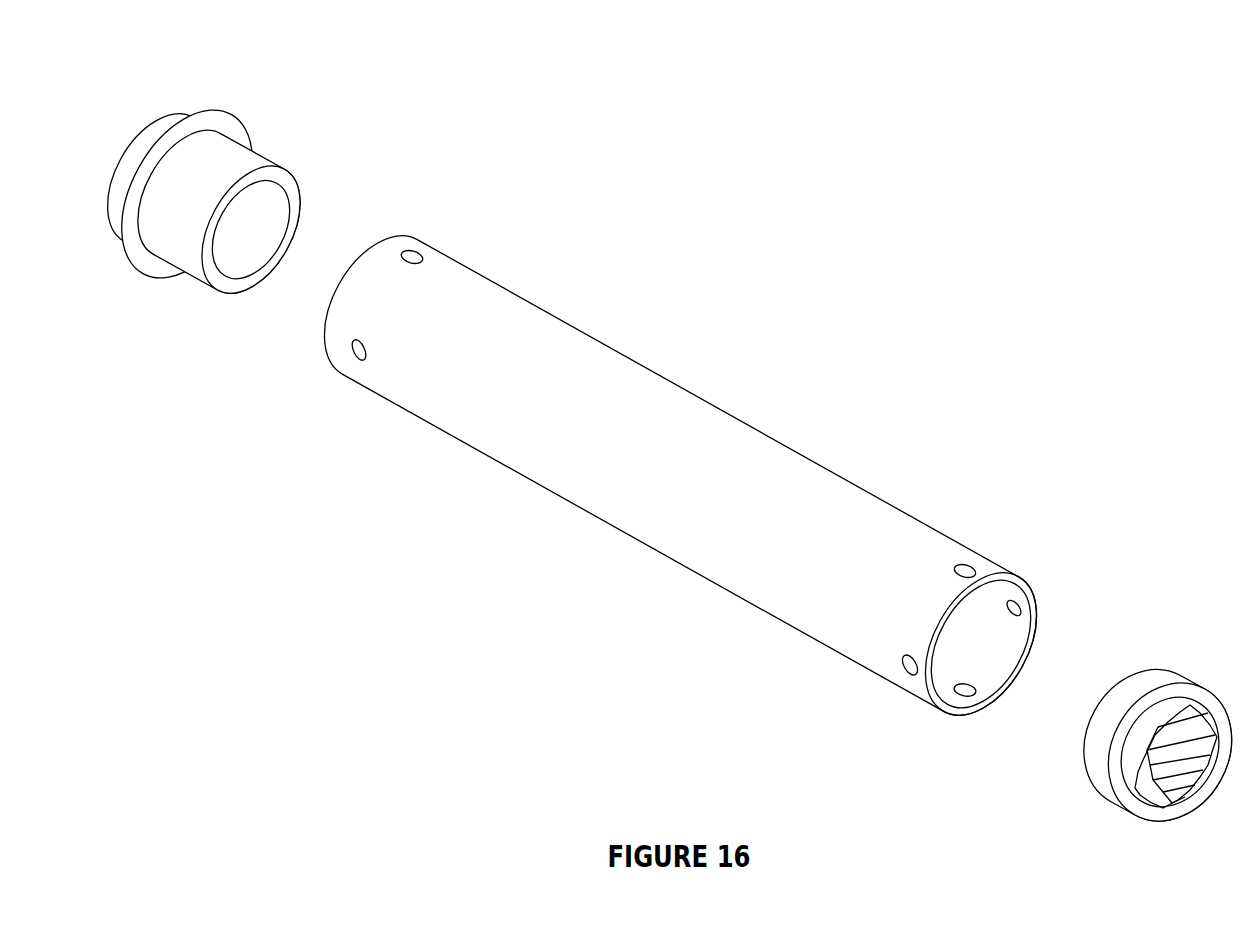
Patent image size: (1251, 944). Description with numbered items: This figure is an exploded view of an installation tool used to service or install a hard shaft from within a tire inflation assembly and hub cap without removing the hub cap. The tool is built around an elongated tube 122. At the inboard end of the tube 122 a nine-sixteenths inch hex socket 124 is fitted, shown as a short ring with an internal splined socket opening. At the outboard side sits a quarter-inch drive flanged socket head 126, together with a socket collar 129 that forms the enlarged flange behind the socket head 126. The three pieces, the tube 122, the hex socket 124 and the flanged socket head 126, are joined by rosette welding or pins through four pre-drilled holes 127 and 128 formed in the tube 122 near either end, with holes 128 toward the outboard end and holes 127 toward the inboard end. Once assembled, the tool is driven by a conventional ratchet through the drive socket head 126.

The elongated tube 122 is at (722, 409).
The hex socket 124 is at (1179, 680).
The drive flanged socket head 126 is at (250, 146).
The pre-drilled hole 127 is at (964, 564).
The pre-drilled hole 128 is at (417, 254).
The socket collar 129 is at (157, 279).